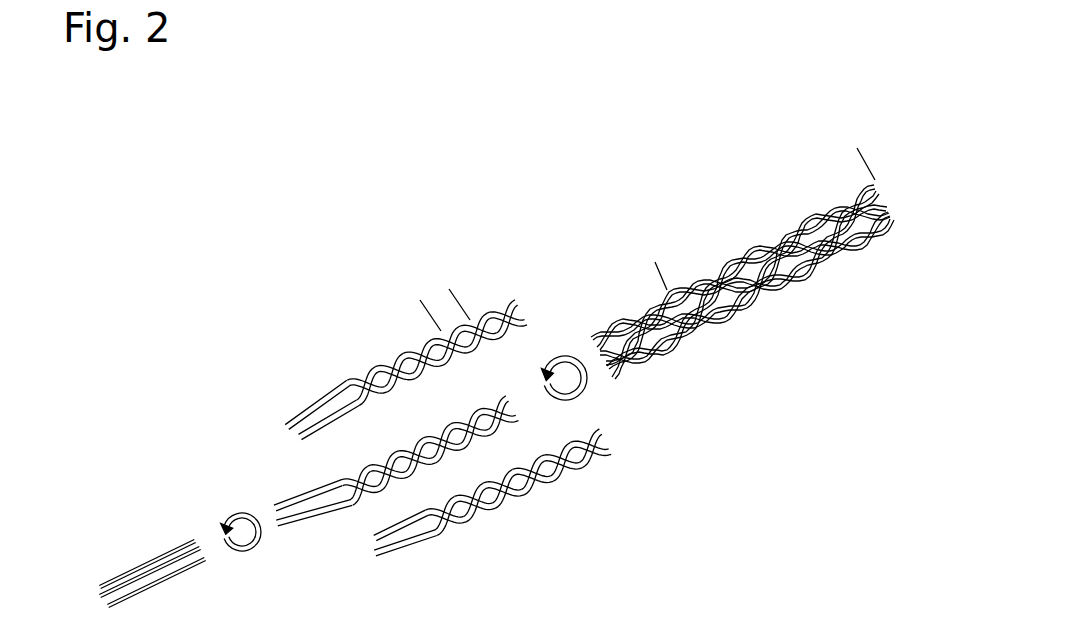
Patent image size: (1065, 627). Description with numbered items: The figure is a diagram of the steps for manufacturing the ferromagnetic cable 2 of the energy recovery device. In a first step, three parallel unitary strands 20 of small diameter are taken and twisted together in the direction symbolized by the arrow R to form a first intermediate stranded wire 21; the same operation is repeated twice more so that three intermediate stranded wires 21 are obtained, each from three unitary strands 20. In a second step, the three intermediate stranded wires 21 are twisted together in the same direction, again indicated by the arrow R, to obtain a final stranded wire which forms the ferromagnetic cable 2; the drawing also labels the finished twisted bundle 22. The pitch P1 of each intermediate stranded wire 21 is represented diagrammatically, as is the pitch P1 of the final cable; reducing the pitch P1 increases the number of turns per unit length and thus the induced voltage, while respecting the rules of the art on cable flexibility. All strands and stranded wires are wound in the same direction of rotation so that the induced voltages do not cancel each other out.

The ferromagnetic cable 2 is at (672, 207).
The unitary strands 20 is at (170, 577).
The intermediate stranded wires 21 is at (392, 357).
The twisted cable bundle 22 is at (757, 243).
The pitch P1 is at (449, 289).
The arrow R is at (404, 471).